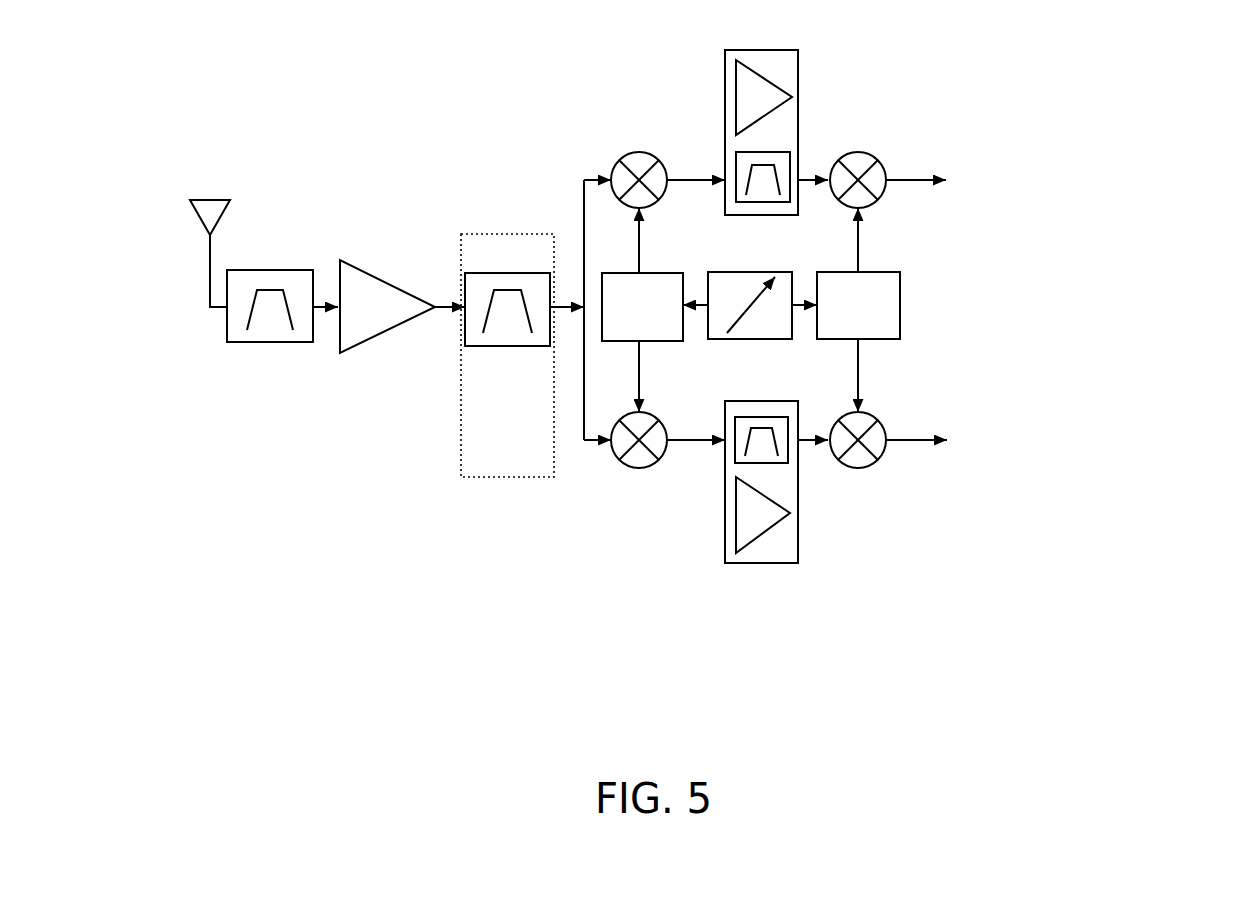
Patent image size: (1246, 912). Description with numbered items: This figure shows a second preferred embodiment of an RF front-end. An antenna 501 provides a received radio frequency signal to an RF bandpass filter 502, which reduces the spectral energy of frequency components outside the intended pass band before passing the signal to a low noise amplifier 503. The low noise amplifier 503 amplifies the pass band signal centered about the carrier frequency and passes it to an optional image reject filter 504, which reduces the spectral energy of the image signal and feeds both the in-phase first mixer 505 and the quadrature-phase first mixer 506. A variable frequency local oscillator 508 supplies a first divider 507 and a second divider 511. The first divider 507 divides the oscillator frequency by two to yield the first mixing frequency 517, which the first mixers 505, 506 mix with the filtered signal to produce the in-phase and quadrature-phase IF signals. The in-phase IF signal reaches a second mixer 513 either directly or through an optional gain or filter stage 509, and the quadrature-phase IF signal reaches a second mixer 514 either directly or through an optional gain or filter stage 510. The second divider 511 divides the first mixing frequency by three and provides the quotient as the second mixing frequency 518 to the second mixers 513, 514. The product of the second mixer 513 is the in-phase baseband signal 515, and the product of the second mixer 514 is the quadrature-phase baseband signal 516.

The antenna 501 is at (213, 250).
The RF bandpass filter 502 is at (226, 329).
The low noise amplifier 503 is at (388, 330).
The image reject filter 504 is at (460, 465).
The in-phase first mixer 505 is at (642, 153).
The quadrature-phase first mixer 506 is at (638, 470).
The first divider 507 is at (655, 272).
The variable frequency local oscillator 508 is at (750, 271).
The optional gain or filter stage 509 is at (798, 75).
The optional gain or filter stage 510 is at (798, 530).
The second divider 511 is at (900, 305).
The second mixer 513 is at (860, 147).
The second mixer 514 is at (858, 470).
The in-phase baseband signal 515 is at (917, 175).
The quadrature-phase baseband signal 516 is at (915, 430).
The first mixing frequency 517 is at (639, 250).
The second mixing frequency 518 is at (858, 247).